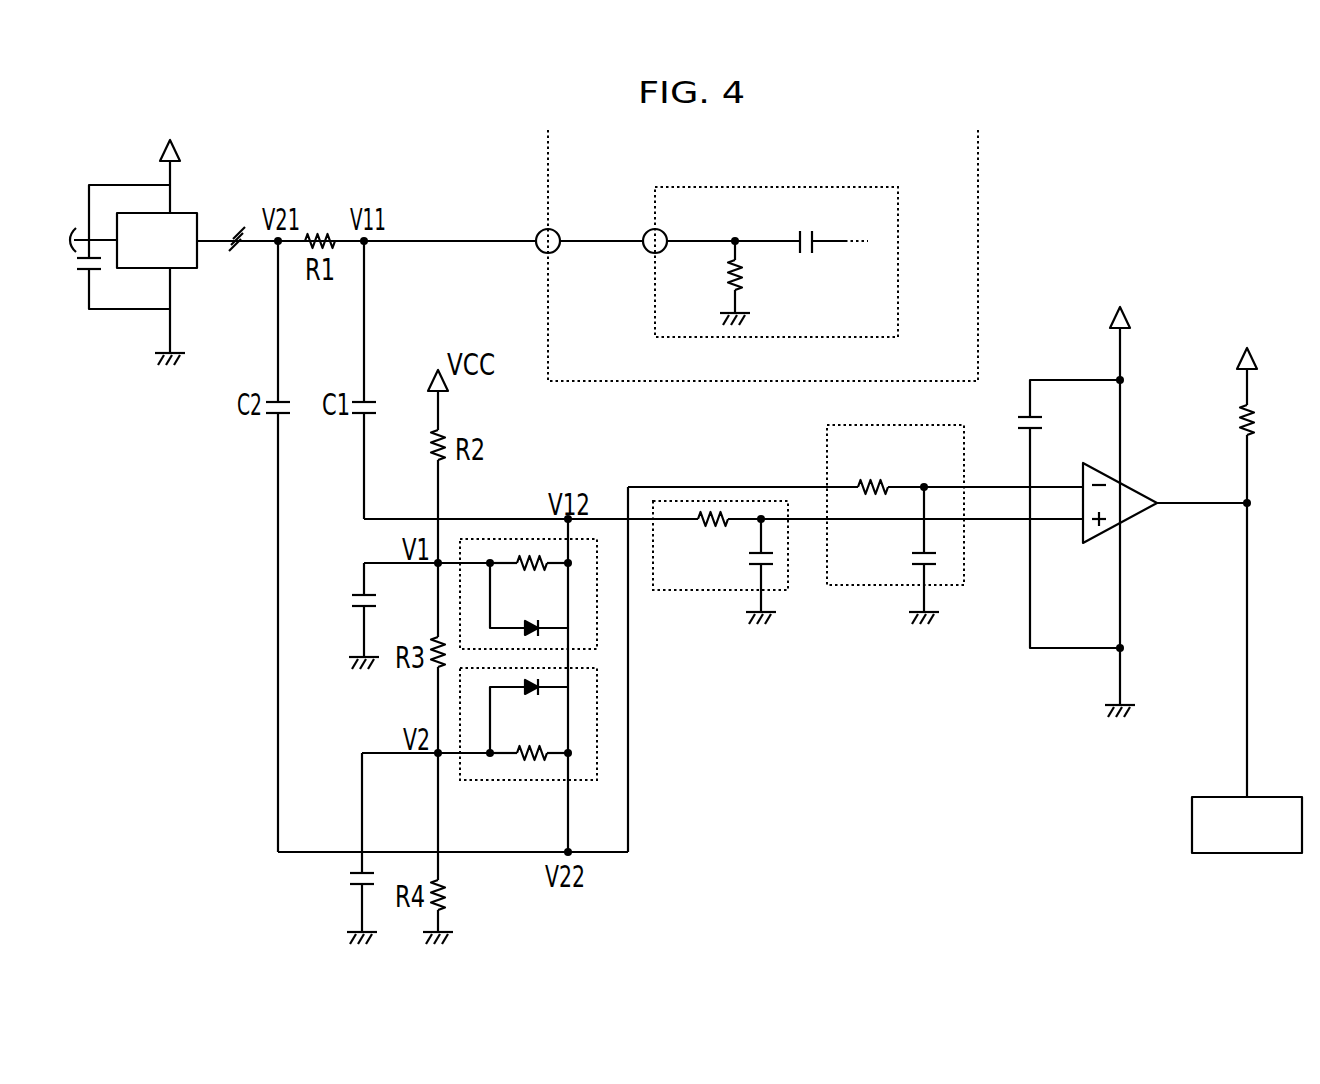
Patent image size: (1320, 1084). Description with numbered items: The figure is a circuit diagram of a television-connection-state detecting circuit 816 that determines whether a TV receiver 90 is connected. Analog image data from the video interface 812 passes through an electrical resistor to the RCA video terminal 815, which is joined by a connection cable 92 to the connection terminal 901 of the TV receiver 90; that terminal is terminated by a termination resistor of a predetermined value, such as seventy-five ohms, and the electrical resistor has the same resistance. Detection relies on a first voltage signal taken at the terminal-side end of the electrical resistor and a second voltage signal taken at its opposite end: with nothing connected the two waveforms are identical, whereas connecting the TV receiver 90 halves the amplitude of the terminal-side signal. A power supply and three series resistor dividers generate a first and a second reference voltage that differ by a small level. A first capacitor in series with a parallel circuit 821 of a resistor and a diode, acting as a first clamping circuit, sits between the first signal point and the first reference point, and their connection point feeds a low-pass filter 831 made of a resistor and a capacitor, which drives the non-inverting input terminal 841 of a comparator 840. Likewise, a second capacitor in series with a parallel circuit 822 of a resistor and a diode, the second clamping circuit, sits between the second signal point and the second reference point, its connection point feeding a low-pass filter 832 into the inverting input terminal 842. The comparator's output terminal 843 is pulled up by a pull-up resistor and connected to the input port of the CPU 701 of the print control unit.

The video interface 812 is at (187, 213).
The RCA video terminal 815 is at (540, 230).
The connection cable 92 is at (603, 240).
The connection terminal 901 is at (648, 253).
The TV receiver 90 is at (828, 187).
The parallel circuit 821 is at (597, 637).
The parallel circuit 822 is at (597, 757).
The low-pass filter 831 is at (698, 590).
The low-pass filter 832 is at (868, 585).
The television-connection-state detecting circuit 816 is at (820, 714).
The comparator 840 is at (1130, 513).
The non-inverting input terminal 841 is at (1076, 523).
The inverting input terminal 842 is at (1074, 479).
The output terminal 843 is at (1160, 489).
The CPU 701 is at (1192, 826).